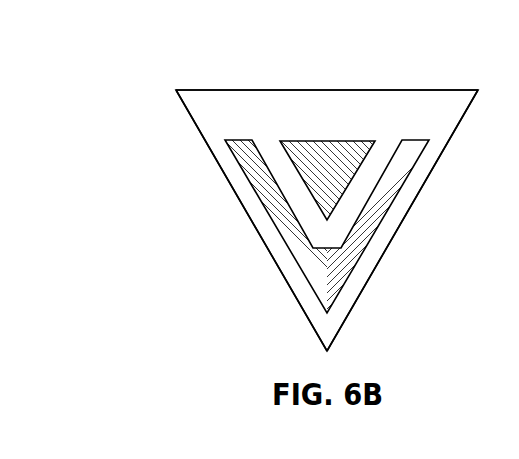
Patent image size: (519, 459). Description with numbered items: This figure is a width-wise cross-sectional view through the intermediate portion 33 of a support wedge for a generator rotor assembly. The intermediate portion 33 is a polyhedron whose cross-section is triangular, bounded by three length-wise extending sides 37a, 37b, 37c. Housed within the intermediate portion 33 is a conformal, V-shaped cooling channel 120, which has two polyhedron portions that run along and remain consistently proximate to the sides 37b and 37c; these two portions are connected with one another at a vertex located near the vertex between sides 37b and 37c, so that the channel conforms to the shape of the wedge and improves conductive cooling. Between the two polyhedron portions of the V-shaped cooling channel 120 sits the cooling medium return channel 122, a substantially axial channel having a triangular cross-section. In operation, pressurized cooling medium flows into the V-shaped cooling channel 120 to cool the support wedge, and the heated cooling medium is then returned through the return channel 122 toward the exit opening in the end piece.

The intermediate portion 33 is at (306, 175).
The length-wise extending side 37a is at (213, 90).
The length-wise extending side 37b is at (368, 282).
The length-wise extending side 37c is at (285, 282).
The V-shaped cooling channel 120 is at (241, 147).
The cooling medium return channel 122 is at (355, 145).